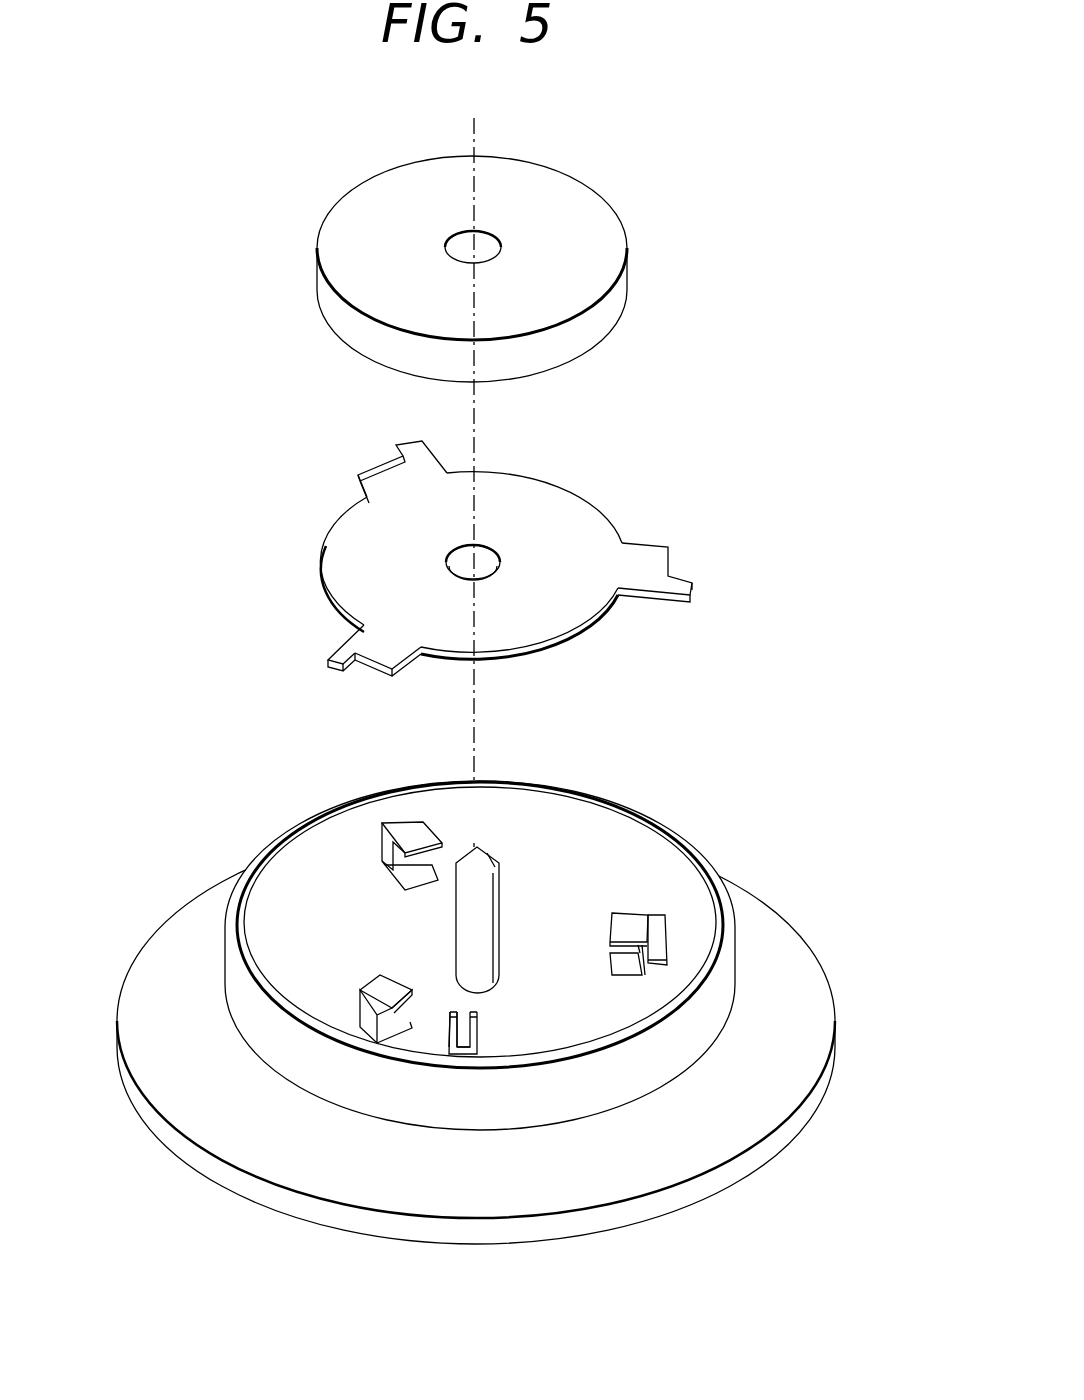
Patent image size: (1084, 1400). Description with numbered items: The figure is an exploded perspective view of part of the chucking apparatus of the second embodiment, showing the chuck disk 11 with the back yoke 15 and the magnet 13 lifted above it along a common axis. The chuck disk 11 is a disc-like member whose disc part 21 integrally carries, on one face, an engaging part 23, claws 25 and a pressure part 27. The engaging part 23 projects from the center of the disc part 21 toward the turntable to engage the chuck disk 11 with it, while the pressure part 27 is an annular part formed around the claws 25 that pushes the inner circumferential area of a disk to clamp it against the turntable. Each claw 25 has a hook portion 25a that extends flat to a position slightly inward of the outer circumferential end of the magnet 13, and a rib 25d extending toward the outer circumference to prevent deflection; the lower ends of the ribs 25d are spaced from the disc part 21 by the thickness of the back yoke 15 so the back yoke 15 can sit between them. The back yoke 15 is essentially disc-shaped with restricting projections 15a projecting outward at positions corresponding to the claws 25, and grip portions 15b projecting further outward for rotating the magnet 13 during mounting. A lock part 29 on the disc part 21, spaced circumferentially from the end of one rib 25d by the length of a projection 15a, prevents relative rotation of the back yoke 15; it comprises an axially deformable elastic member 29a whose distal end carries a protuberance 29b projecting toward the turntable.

The chuck disk 11 is at (505, 971).
The magnet 13 is at (623, 190).
The back yoke 15 is at (600, 482).
The restricting projection 15a is at (393, 650).
The grip portion 15b is at (338, 657).
The disc part 21 is at (763, 953).
The engaging part 23 is at (478, 847).
The claw 25 is at (402, 818).
The hook portion 25a is at (385, 983).
The rib 25d is at (387, 1030).
The pressure part 27 is at (622, 808).
The lock part 29 is at (467, 1060).
The elastic member 29a is at (440, 1043).
The protuberance 29b is at (463, 1030).